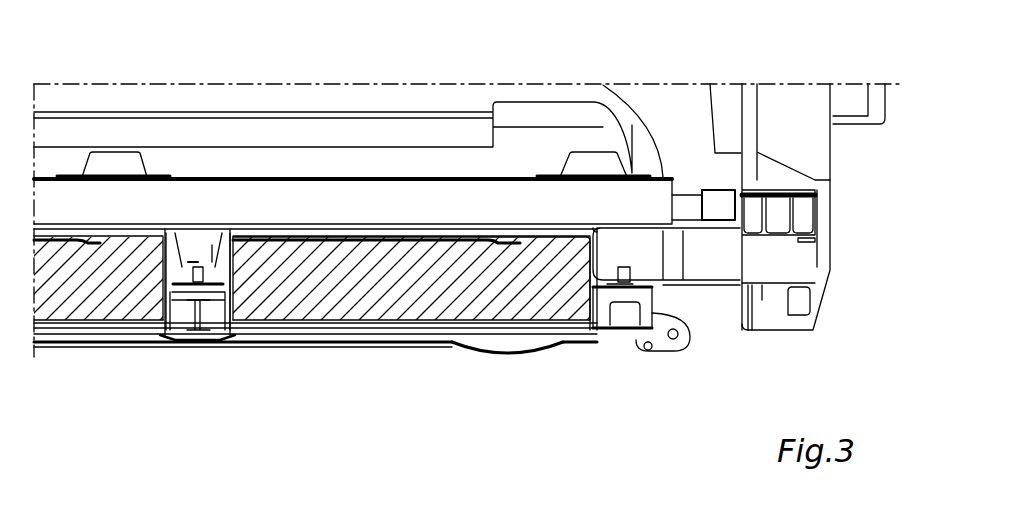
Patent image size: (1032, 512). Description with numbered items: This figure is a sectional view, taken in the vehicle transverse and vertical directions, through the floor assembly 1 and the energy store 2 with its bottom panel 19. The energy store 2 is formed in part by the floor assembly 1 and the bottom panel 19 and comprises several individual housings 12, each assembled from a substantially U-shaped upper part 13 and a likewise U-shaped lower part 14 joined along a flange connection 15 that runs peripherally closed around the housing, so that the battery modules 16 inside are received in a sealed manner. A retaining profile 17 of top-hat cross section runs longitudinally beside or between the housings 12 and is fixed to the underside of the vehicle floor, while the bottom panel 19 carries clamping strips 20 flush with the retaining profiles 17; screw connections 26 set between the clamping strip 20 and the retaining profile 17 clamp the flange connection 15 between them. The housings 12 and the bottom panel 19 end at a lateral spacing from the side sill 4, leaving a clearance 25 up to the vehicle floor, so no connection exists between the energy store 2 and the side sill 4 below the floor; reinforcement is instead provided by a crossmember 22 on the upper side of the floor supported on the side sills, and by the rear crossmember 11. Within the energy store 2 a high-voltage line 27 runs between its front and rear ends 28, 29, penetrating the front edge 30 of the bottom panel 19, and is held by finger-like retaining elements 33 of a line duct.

The floor assembly 1 is at (802, 55).
The energy store 2 is at (345, 354).
The side sill 4 is at (836, 248).
The rear crossmember 11 is at (718, 265).
The individual housing 12 is at (466, 293).
The upper part 13 is at (135, 236).
The lower part 14 is at (140, 323).
The flange connection 15 is at (211, 326).
The battery modules 16 is at (112, 296).
The retaining profile 17 is at (213, 253).
The bottom panel 19 is at (402, 345).
The clamping strip 20 is at (197, 308).
The crossmember 22 is at (555, 197).
The clearance 25 is at (704, 313).
The screw connection 26 is at (192, 258).
The line 27 is at (755, 200).
The front end 28 is at (776, 205).
The rear end 29 is at (805, 213).
The front edge 30 is at (762, 284).
The retaining element 33 is at (826, 300).